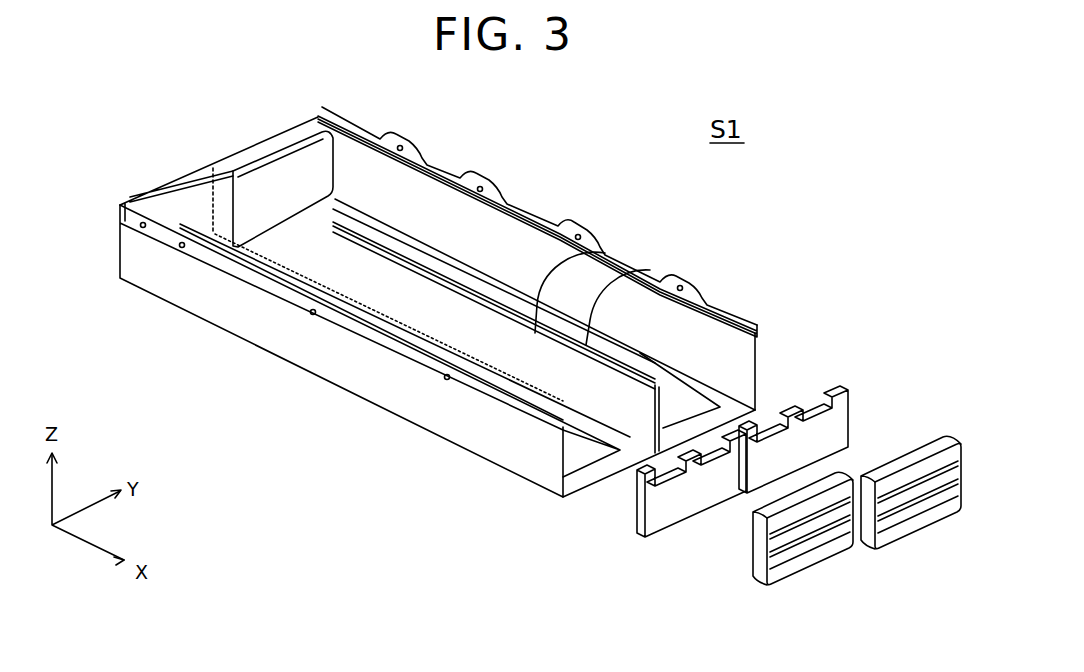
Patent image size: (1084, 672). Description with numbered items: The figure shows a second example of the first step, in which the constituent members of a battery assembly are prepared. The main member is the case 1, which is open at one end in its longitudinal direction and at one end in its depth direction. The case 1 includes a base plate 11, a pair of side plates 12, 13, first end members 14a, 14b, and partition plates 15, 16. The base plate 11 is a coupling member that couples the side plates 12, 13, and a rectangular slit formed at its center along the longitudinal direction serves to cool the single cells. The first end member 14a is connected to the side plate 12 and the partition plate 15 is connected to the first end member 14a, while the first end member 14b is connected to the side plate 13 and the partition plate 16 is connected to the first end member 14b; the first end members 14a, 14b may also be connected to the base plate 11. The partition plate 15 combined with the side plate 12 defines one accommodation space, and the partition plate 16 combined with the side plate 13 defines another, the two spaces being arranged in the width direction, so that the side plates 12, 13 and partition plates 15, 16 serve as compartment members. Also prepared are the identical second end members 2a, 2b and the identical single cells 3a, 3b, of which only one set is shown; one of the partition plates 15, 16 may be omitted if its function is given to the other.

The case 1 is at (437, 152).
The second end member 2a is at (798, 580).
The second end member 2b is at (903, 455).
The single cell 3a is at (663, 535).
The single cell 3b is at (799, 397).
The base plate 11 is at (580, 490).
The side plate 12 is at (408, 428).
The side plate 13 is at (364, 127).
The first end member 14a is at (172, 197).
The first end member 14b is at (272, 148).
The partition plate 15 is at (583, 250).
The partition plate 16 is at (640, 272).